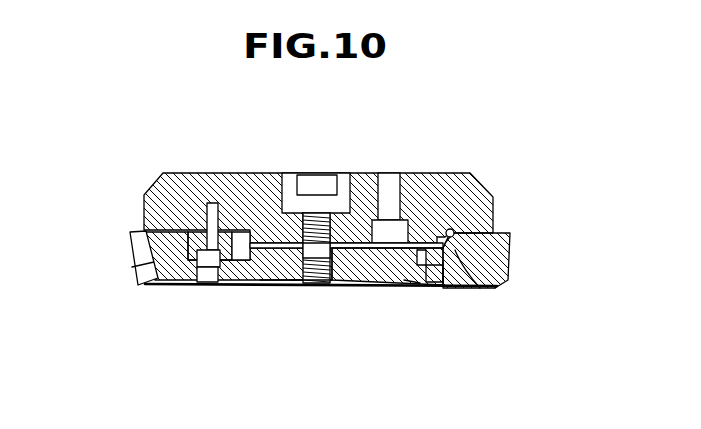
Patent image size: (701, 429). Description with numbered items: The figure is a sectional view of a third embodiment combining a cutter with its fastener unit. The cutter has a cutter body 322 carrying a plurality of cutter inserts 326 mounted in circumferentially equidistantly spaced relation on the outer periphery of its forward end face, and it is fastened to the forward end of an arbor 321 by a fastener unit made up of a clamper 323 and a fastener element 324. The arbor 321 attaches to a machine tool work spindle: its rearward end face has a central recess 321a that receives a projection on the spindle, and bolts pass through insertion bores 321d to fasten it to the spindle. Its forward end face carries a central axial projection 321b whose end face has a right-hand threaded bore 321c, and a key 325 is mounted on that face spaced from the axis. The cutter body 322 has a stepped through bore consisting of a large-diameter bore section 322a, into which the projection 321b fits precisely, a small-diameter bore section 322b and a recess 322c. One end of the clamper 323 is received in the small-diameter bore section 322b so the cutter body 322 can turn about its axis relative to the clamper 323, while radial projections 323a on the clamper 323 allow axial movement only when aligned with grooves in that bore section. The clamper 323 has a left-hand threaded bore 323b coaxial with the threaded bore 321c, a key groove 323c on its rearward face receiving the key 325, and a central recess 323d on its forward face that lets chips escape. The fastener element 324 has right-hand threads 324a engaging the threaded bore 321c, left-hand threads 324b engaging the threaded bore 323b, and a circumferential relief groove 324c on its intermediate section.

The arbor 321 is at (482, 186).
The recess 321a is at (316, 212).
The axial projection 321b is at (480, 288).
The threaded bore 321c is at (287, 210).
The insertion bores 321d is at (397, 190).
The cutter body 322 is at (513, 241).
The large-diameter bore section 322a is at (437, 287).
The small-diameter bore section 322b is at (412, 286).
The recess 322c is at (448, 286).
The clamper 323 is at (255, 289).
The projections 323a is at (212, 285).
The threaded bore 323b is at (300, 283).
The key groove 323c is at (228, 232).
The recess 323d is at (277, 285).
The fastener element 324 is at (338, 299).
The right-hand threads 324a is at (380, 172).
The left-hand threads 324b is at (343, 285).
The circumferential relief groove 324c is at (358, 285).
The key 325 is at (205, 226).
The cutter inserts 326 is at (142, 270).